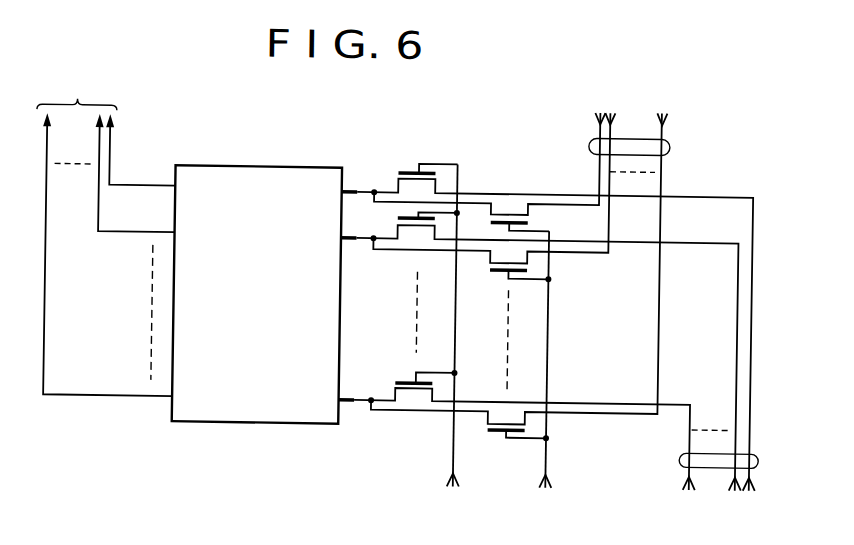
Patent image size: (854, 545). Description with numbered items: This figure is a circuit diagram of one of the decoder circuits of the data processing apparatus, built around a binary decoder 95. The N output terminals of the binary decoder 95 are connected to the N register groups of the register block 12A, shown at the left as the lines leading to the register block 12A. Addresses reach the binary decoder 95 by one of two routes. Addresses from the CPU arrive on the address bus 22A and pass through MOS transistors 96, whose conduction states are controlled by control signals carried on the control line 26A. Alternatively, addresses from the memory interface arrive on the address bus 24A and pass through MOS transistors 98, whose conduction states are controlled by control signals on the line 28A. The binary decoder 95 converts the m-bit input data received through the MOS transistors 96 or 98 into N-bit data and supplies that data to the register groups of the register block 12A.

The register block 12A is at (159, 232).
The binary decoder 95 is at (294, 425).
The MOS transistors 96 is at (396, 173).
The MOS transistors 98 is at (536, 212).
The control line 26A is at (455, 435).
The line 28A is at (551, 453).
The address bus 24A is at (670, 143).
The address bus 22A is at (683, 453).